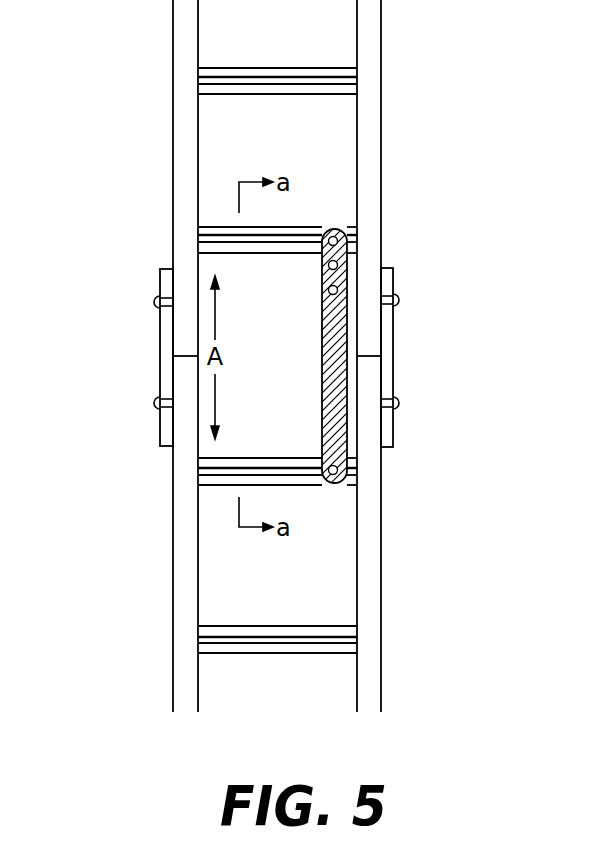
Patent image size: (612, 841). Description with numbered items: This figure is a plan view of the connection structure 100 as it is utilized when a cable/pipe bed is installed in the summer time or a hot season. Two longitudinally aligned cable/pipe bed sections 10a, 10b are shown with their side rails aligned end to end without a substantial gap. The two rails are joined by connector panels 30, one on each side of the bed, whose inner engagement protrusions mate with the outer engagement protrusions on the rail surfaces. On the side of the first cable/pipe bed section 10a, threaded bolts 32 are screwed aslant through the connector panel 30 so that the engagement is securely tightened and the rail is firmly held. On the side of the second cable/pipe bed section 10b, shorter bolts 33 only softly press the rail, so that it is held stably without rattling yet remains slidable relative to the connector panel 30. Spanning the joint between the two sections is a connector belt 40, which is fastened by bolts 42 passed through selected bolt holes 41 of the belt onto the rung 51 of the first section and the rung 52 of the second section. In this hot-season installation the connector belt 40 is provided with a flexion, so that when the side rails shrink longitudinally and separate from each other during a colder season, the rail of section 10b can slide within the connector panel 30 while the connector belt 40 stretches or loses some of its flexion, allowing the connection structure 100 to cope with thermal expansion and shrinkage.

The cable/pipe bed section 10a is at (371, 608).
The cable/pipe bed section 10b is at (371, 123).
The connector panel 30 is at (157, 353).
The threaded bolt 32 is at (153, 405).
The bolt 33 is at (153, 302).
The connector belt 40 is at (332, 362).
The hole 41 is at (340, 242).
The bolt 42 is at (328, 252).
The rung 51 is at (330, 482).
The rung 52 is at (223, 227).
The connection structure 100 is at (373, 349).